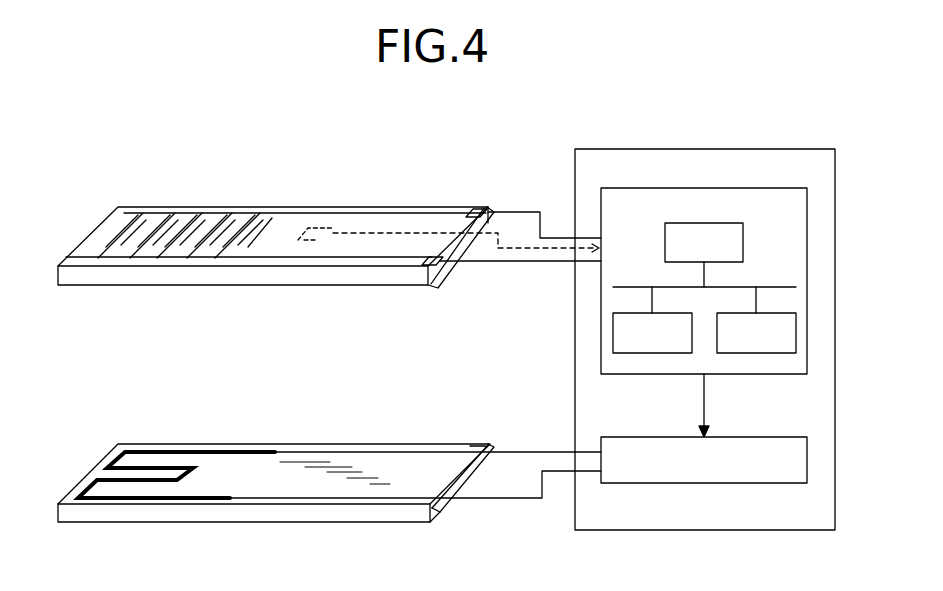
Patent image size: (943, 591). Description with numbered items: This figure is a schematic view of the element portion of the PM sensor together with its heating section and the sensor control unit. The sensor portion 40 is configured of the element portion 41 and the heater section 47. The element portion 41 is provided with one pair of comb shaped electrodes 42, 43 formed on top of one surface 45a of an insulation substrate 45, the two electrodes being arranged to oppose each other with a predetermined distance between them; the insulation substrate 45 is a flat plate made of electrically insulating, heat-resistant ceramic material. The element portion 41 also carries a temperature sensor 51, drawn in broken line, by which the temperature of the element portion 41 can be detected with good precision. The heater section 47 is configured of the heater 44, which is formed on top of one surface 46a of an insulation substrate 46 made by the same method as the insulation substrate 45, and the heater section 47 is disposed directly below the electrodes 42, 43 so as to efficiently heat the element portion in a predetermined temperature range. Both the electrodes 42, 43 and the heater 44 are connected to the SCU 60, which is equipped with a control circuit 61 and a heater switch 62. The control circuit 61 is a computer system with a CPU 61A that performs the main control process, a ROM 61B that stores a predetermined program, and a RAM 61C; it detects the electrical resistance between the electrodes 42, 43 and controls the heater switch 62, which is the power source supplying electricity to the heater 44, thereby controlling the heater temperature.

The sensor portion 40 is at (512, 160).
The element portion 41 is at (80, 234).
The comb shaped electrode 42 is at (182, 218).
The comb shaped electrode 43 is at (207, 230).
The heater 44 is at (162, 500).
The insulation substrate 45 is at (437, 268).
The one surface of insulation substrate 45a is at (425, 224).
The insulation substrate 46 is at (443, 507).
The one surface of insulation substrate 46a is at (427, 463).
The heater section 47 is at (80, 472).
The temperature sensor 51 is at (310, 218).
The SCU 60 is at (727, 148).
The control circuit 61 is at (755, 187).
The CPU 61A is at (744, 231).
The ROM 61B is at (648, 354).
The RAM 61C is at (750, 354).
The heater switch 62 is at (717, 484).